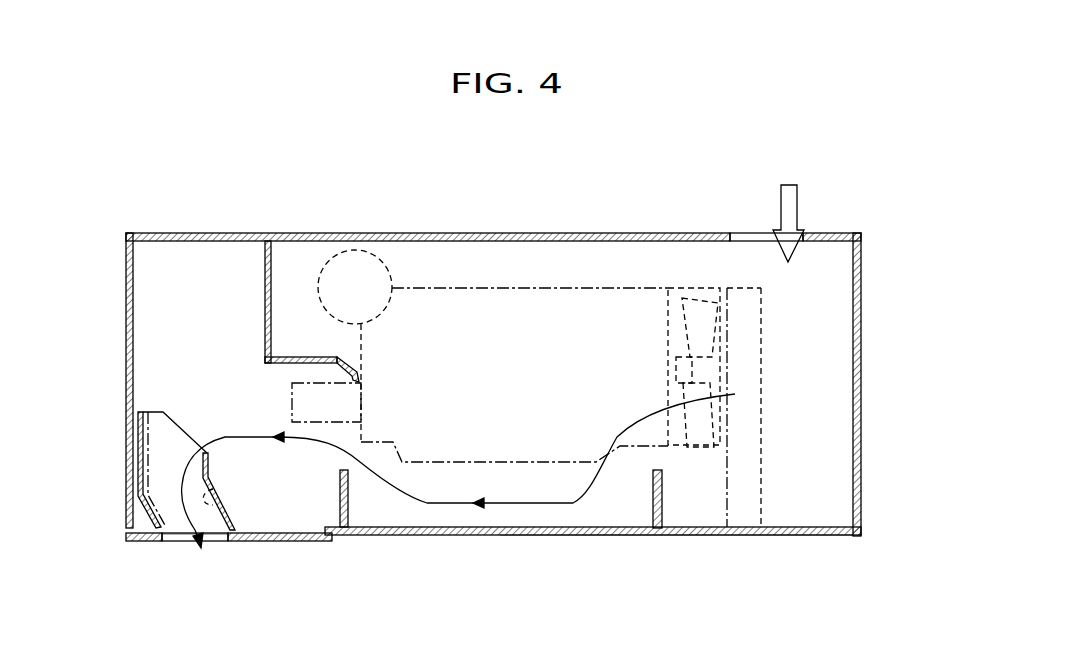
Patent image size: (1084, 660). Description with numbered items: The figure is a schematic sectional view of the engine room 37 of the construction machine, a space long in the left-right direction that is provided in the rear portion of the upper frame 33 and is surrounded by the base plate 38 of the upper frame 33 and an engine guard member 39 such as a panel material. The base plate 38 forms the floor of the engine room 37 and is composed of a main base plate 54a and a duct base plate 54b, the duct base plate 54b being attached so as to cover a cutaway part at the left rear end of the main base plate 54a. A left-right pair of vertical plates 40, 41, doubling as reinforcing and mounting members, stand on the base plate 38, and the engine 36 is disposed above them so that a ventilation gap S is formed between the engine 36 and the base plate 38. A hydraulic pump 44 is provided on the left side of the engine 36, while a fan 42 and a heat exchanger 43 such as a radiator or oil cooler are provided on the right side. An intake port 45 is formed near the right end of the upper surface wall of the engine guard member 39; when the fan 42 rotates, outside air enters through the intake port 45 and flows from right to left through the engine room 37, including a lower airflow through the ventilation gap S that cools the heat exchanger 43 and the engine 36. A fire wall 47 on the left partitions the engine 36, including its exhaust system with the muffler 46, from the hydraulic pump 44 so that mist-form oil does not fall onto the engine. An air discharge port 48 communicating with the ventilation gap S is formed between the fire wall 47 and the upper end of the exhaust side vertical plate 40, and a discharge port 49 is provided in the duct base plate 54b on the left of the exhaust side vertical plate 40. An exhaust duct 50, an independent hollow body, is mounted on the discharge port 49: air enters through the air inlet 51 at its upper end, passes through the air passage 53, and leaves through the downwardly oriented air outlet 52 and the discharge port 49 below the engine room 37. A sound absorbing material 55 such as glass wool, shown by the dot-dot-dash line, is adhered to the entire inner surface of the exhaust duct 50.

The upper frame 33 is at (666, 541).
The engine 36 is at (453, 288).
The engine room 37 is at (554, 271).
The base plate 38 is at (493, 565).
The engine guard member 39 is at (861, 342).
The exhaust side vertical plate 40 is at (348, 492).
The vertical plate 41 is at (653, 495).
The fan 42 is at (714, 297).
The heat exchanger 43 is at (762, 298).
The hydraulic pump 44 is at (290, 405).
The intake port 45 is at (812, 240).
The muffler 46 is at (355, 250).
The fire wall 47 is at (267, 298).
The air discharge port 48 is at (340, 445).
The discharge port 49 is at (210, 540).
The exhaust duct 50 is at (140, 440).
The air inlet 51 is at (191, 425).
The air outlet 52 is at (177, 532).
The air passage 53 is at (163, 478).
The main base plate 54a is at (535, 536).
The duct base plate 54b is at (308, 542).
The sound absorbing material 55 is at (220, 497).
The ventilation gap S is at (453, 490).